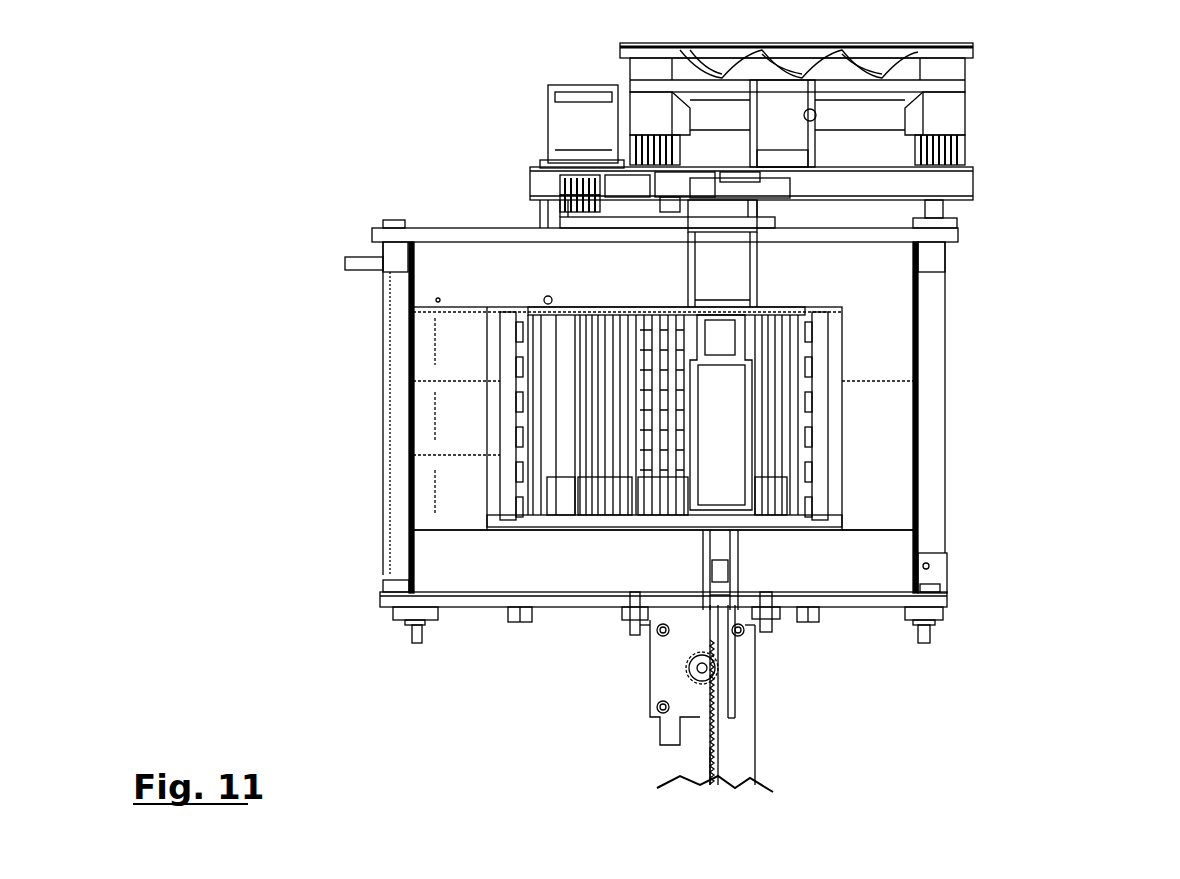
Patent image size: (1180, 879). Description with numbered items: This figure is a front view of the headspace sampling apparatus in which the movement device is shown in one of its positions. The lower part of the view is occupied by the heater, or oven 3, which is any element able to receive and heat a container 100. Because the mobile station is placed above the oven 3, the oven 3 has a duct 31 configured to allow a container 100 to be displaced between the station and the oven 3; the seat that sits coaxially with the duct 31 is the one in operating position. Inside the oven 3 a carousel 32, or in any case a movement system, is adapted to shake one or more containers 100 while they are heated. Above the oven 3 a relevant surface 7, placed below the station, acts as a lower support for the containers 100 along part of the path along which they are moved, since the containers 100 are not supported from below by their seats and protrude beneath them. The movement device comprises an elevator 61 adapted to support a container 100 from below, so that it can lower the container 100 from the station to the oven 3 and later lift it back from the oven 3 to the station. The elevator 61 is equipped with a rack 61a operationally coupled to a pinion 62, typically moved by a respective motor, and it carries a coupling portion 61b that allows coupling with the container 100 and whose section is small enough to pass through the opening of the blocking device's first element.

The relevant surface 7 is at (952, 72).
The heater 3 is at (470, 412).
The duct 31 is at (732, 265).
The carousel 32 is at (598, 498).
The container 100 is at (722, 440).
The elevator 61 is at (722, 710).
The rack 61a is at (708, 748).
The coupling portion 61b is at (722, 558).
The pinion 62 is at (688, 668).